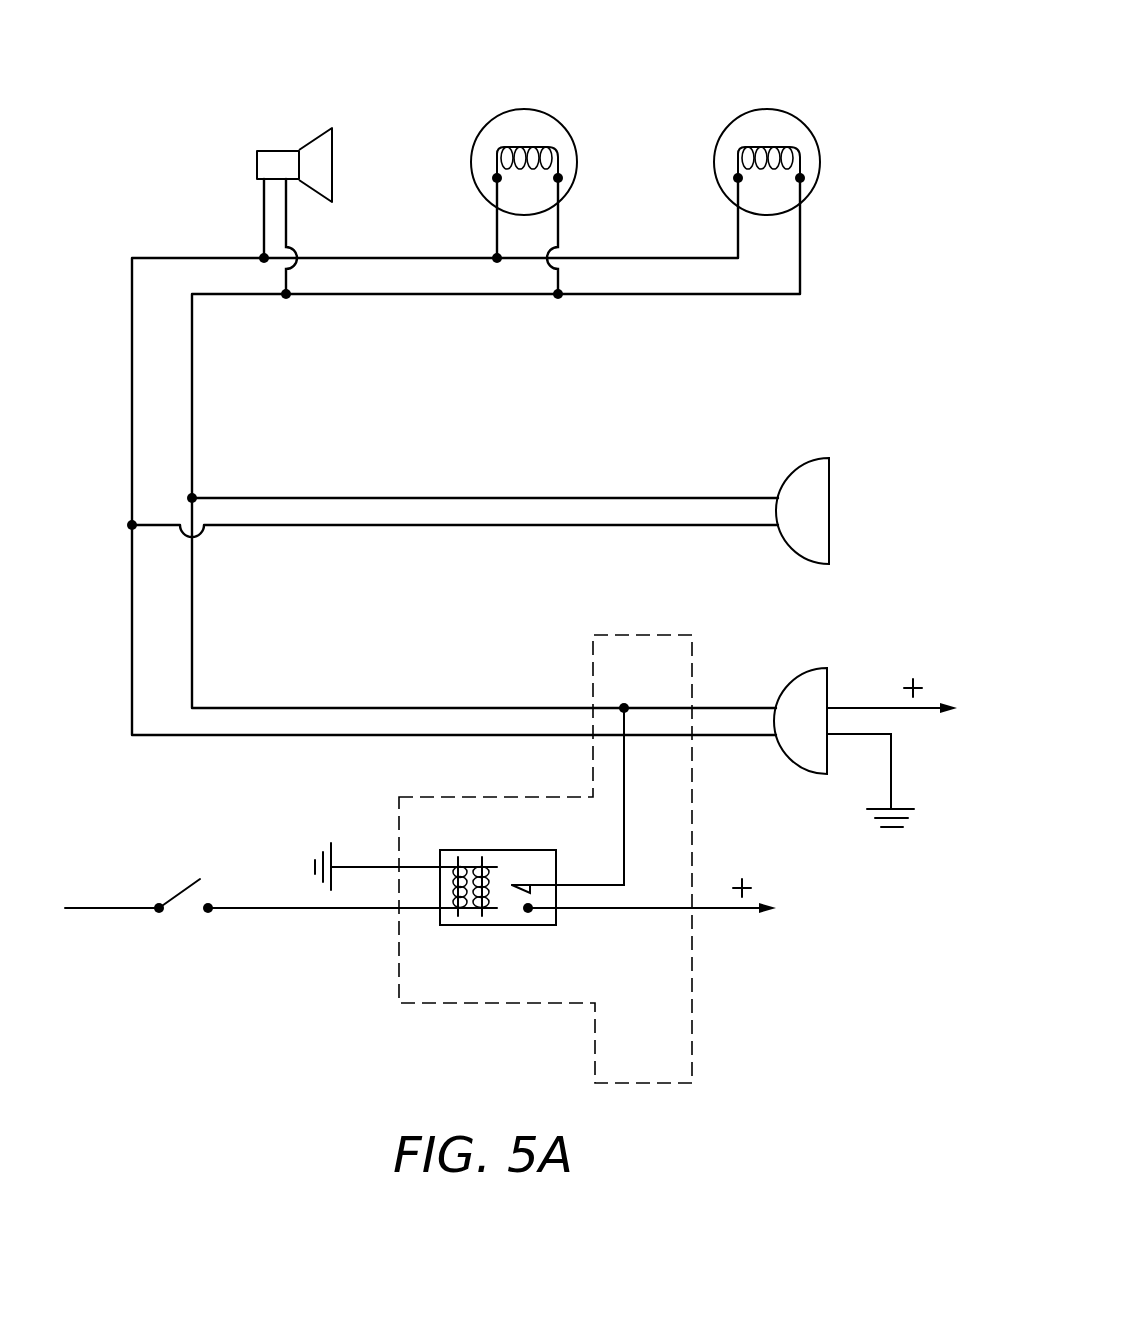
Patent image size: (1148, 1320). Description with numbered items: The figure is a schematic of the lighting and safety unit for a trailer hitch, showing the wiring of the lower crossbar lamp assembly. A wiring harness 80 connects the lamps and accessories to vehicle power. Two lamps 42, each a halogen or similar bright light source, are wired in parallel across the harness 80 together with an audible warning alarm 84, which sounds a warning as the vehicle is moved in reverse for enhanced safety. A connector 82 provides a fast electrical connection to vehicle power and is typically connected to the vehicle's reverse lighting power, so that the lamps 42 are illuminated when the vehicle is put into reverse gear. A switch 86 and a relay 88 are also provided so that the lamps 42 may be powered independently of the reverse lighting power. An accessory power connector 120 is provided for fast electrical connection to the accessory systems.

The lamp 42 is at (522, 110).
The wiring harness 80 is at (132, 710).
The connector 82 is at (818, 669).
The audible warning alarm 84 is at (272, 150).
The switch 86 is at (186, 884).
The relay 88 is at (488, 925).
The accessory power connector 120 is at (802, 465).